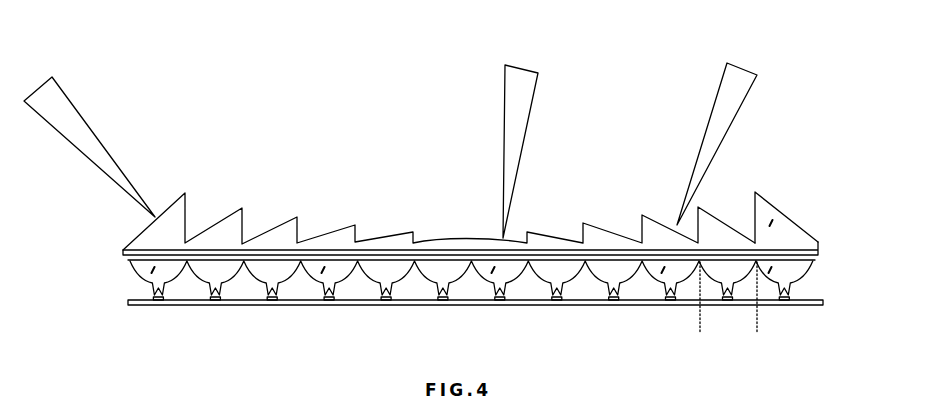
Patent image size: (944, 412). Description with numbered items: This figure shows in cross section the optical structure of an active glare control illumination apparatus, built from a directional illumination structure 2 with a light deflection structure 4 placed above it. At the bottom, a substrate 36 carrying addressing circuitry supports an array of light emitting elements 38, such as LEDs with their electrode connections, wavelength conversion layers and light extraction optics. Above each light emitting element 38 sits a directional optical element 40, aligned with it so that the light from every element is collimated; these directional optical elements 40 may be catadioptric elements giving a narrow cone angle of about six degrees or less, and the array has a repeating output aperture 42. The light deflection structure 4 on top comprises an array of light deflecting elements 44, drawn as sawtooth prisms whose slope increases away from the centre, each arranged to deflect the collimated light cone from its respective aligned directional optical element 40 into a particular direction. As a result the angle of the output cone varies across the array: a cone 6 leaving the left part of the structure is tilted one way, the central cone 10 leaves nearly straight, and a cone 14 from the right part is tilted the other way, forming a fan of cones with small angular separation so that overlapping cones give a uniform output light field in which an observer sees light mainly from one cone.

The directional illumination structure 2 is at (479, 321).
The light deflection structure 4 is at (455, 221).
The light cone 6 is at (89, 143).
The light cone 10 is at (521, 144).
The light cone 14 is at (728, 142).
The substrate 36 is at (485, 306).
The light emitting element 38 is at (783, 300).
The directional optical element 40 is at (793, 275).
The output aperture 42 is at (757, 347).
The light deflecting element 44 is at (780, 212).